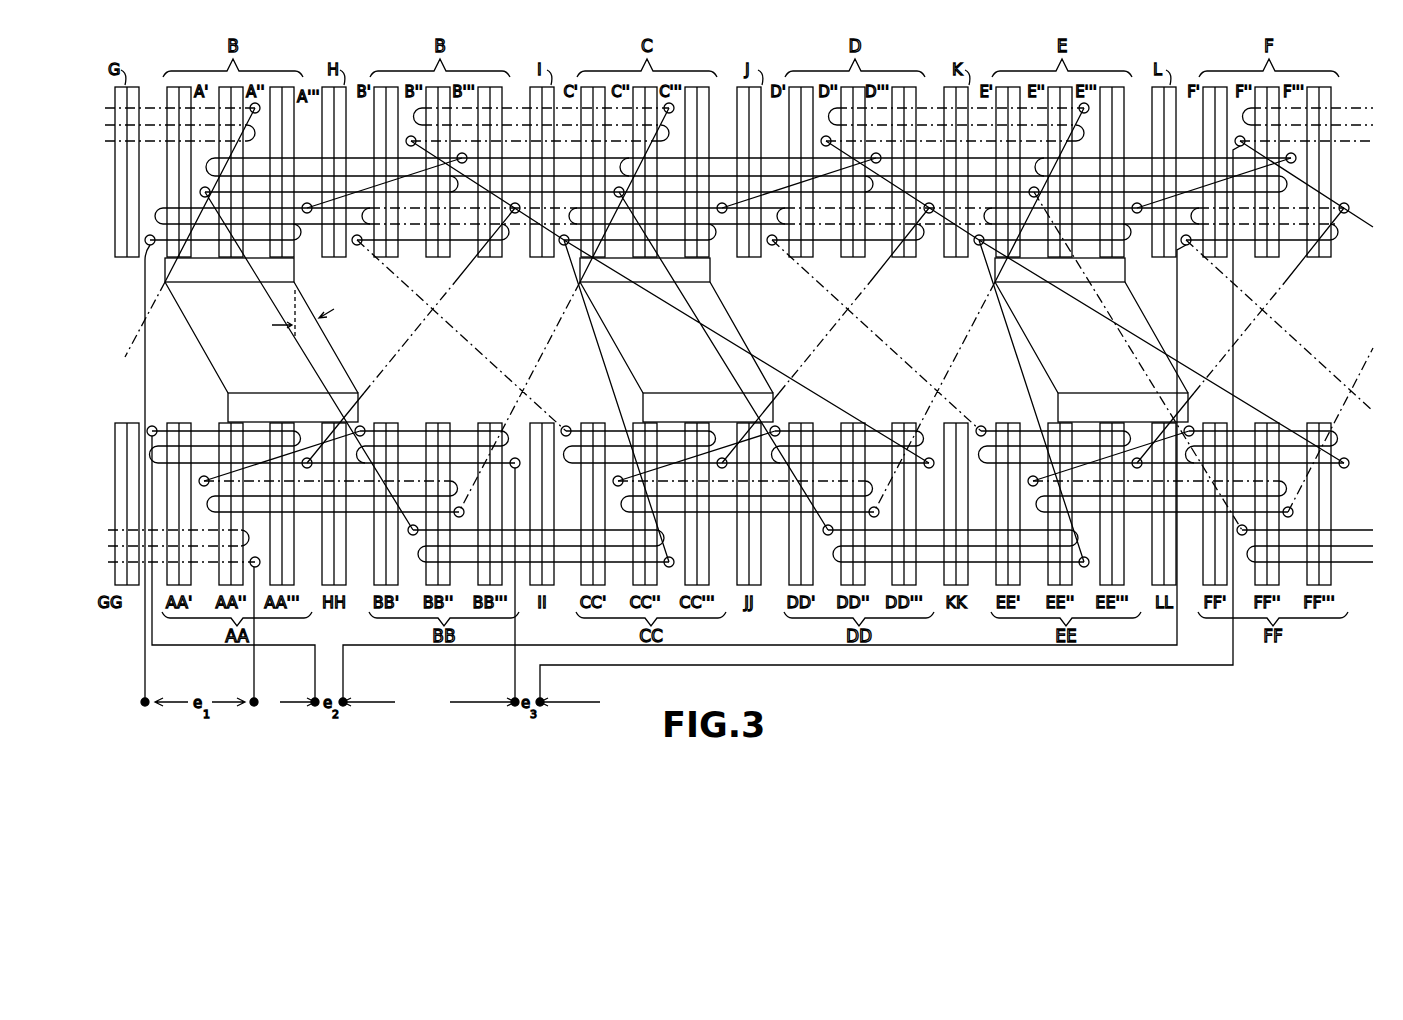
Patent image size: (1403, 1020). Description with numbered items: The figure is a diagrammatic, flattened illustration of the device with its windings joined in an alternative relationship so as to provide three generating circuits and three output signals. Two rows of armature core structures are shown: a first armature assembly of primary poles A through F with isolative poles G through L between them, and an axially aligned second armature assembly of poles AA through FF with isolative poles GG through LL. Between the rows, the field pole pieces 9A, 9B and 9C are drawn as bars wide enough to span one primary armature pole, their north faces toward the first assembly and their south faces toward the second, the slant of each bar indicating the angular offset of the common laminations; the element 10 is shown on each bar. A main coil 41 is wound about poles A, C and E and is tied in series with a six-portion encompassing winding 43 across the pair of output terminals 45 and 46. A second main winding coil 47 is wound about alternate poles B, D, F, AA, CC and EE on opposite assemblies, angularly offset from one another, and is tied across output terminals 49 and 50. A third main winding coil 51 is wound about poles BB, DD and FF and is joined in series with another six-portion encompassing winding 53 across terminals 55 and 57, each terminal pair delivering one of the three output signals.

The field pole piece 9A is at (301, 416).
The field pole piece 9B is at (716, 416).
The field pole piece 9C is at (1131, 416).
The magnet slider body 10 is at (271, 363).
The main coil 41 is at (158, 215).
The encompassing winding 43 is at (308, 154).
The output terminal 45 is at (148, 251).
The output terminal 46 is at (256, 706).
The second main winding coil 47 is at (511, 247).
The output terminal 49 is at (313, 706).
The output terminal 50 is at (347, 706).
The third main winding coil 51 is at (464, 428).
The encompassing winding 53 is at (145, 108).
The terminal 55 is at (544, 706).
The terminal 57 is at (510, 706).